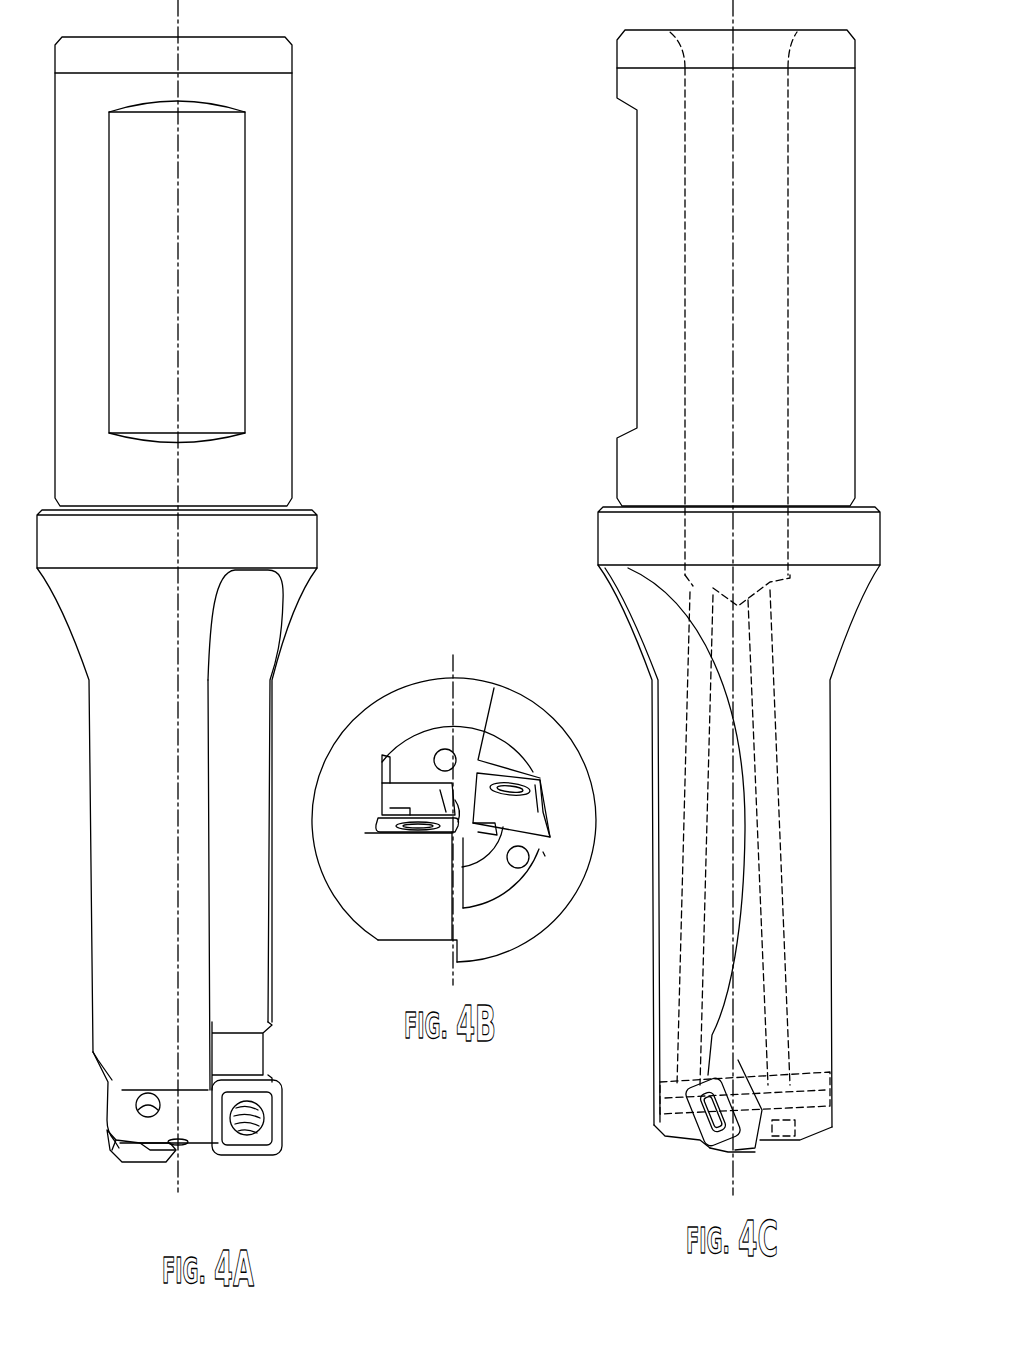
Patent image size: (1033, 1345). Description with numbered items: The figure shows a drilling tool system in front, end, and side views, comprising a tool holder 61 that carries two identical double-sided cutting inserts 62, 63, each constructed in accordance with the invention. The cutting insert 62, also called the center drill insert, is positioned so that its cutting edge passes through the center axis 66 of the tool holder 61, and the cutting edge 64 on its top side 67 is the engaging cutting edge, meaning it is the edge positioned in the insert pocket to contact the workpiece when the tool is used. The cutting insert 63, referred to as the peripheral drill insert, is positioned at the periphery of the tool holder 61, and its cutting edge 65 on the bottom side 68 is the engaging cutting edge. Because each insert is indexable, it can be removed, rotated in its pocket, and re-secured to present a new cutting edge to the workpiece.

In FIG. 4A, the tool holder 61 is at (307, 302).
In FIG. 4B, the tool holder 61 is at (426, 666).
In FIG. 4C, the tool holder 61 is at (607, 366).
In FIG. 4A, the cutting insert 62 is at (128, 1174).
In FIG. 4B, the cutting insert 62 is at (401, 770).
In FIG. 4C, the cutting insert 62 is at (762, 1078).
In FIG. 4A, the cutting insert 63 is at (221, 1128).
In FIG. 4B, the cutting insert 63 is at (557, 852).
In FIG. 4C, the cutting insert 63 is at (763, 1132).
In FIG. 4A, the cutting edge 64 is at (152, 1153).
In FIG. 4C, the cutting edge 64 is at (750, 1165).
In FIG. 4A, the cutting edge 65 is at (249, 1156).
In FIG. 4C, the cutting edge 65 is at (715, 1157).
In FIG. 4A, the center axis 66 is at (182, 186).
In FIG. 4C, the center axis 66 is at (729, 186).
In FIG. 4B, the top side 67 is at (396, 842).
In FIG. 4B, the bottom side 68 is at (492, 769).